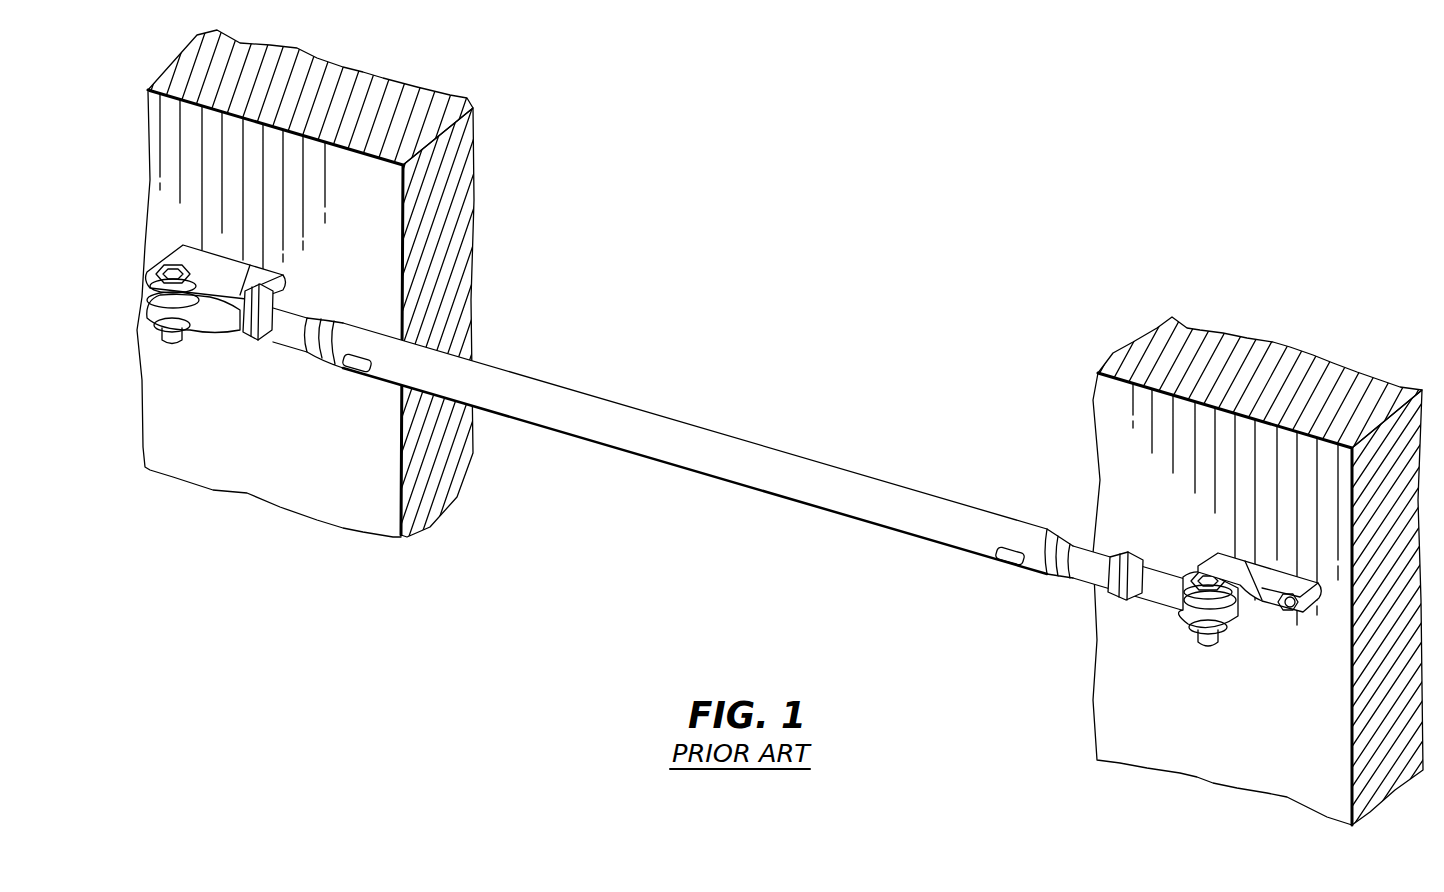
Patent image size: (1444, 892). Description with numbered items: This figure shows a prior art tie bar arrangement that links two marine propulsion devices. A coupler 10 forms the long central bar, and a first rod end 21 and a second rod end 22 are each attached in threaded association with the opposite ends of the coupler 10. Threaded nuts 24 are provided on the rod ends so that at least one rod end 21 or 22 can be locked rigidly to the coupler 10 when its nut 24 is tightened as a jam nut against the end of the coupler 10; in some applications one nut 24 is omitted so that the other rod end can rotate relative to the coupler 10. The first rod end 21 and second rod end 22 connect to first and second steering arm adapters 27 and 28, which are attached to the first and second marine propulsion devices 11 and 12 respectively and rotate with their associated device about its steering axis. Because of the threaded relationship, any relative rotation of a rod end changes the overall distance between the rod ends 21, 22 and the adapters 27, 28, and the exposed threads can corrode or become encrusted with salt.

The coupler 10 is at (598, 413).
The first marine propulsion device 11 is at (1108, 433).
The second marine propulsion device 12 is at (376, 212).
The first rod end 21 is at (1148, 590).
The second rod end 22 is at (224, 320).
The threaded nut 24 is at (257, 345).
The first steering arm adapter 27 is at (1250, 612).
The second steering arm adapter 28 is at (232, 260).